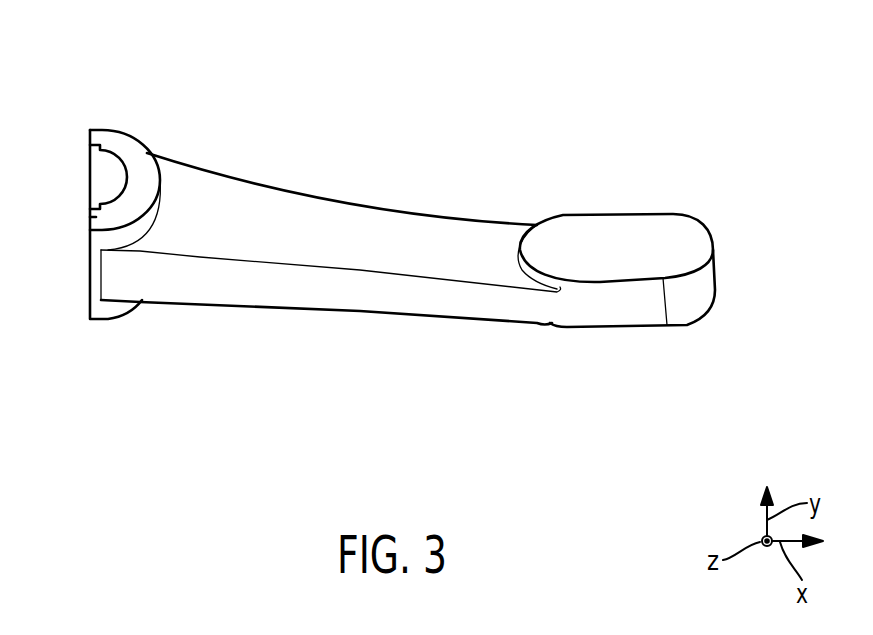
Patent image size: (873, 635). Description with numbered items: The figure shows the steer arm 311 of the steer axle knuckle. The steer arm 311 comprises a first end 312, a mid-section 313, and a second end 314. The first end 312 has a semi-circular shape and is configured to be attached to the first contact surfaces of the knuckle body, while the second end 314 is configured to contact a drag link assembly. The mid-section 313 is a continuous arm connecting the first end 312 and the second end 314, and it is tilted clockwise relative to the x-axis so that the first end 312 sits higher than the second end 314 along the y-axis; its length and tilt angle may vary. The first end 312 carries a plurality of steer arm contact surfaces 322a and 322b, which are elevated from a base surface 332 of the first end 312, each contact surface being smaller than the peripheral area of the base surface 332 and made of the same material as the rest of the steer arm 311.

The steer arm 311 is at (603, 119).
The first end 312 is at (113, 320).
The mid-section 313 is at (563, 355).
The second end 314 is at (677, 308).
The steer arm contact surface 322a is at (92, 218).
The steer arm contact surface 322b is at (90, 130).
The base surface 332 is at (97, 226).